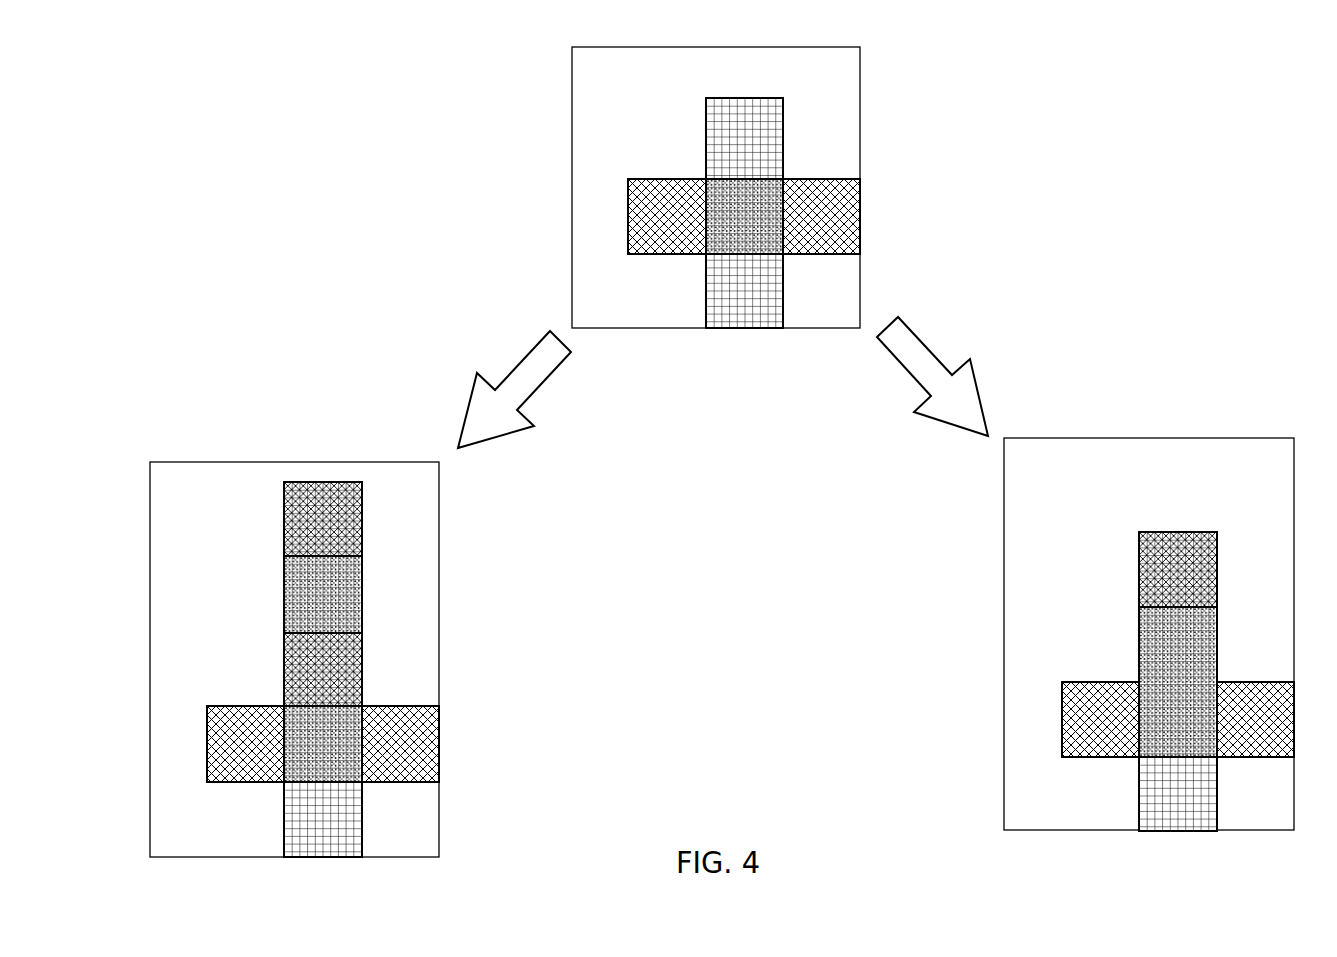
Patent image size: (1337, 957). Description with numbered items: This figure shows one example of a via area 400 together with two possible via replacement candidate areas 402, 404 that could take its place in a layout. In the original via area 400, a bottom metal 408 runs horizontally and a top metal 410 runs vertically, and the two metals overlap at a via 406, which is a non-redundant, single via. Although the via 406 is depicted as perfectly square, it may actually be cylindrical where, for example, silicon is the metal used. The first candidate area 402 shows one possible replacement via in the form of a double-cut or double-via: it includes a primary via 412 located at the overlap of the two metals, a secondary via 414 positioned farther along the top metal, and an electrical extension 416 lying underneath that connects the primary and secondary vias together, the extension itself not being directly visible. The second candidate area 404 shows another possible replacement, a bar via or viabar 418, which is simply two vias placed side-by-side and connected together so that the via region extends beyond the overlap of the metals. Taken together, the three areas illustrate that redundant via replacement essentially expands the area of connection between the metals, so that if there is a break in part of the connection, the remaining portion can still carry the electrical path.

The via area 400 is at (784, 183).
The via replacement candidate area 402 is at (285, 613).
The via replacement candidate area 404 is at (1151, 588).
The via 406 is at (707, 178).
The bottom metal 408 is at (861, 207).
The top metal 410 is at (747, 97).
The primary via 412 is at (297, 718).
The secondary via 414 is at (300, 597).
The electrical extension 416 is at (378, 620).
The bar via 418 is at (1150, 680).